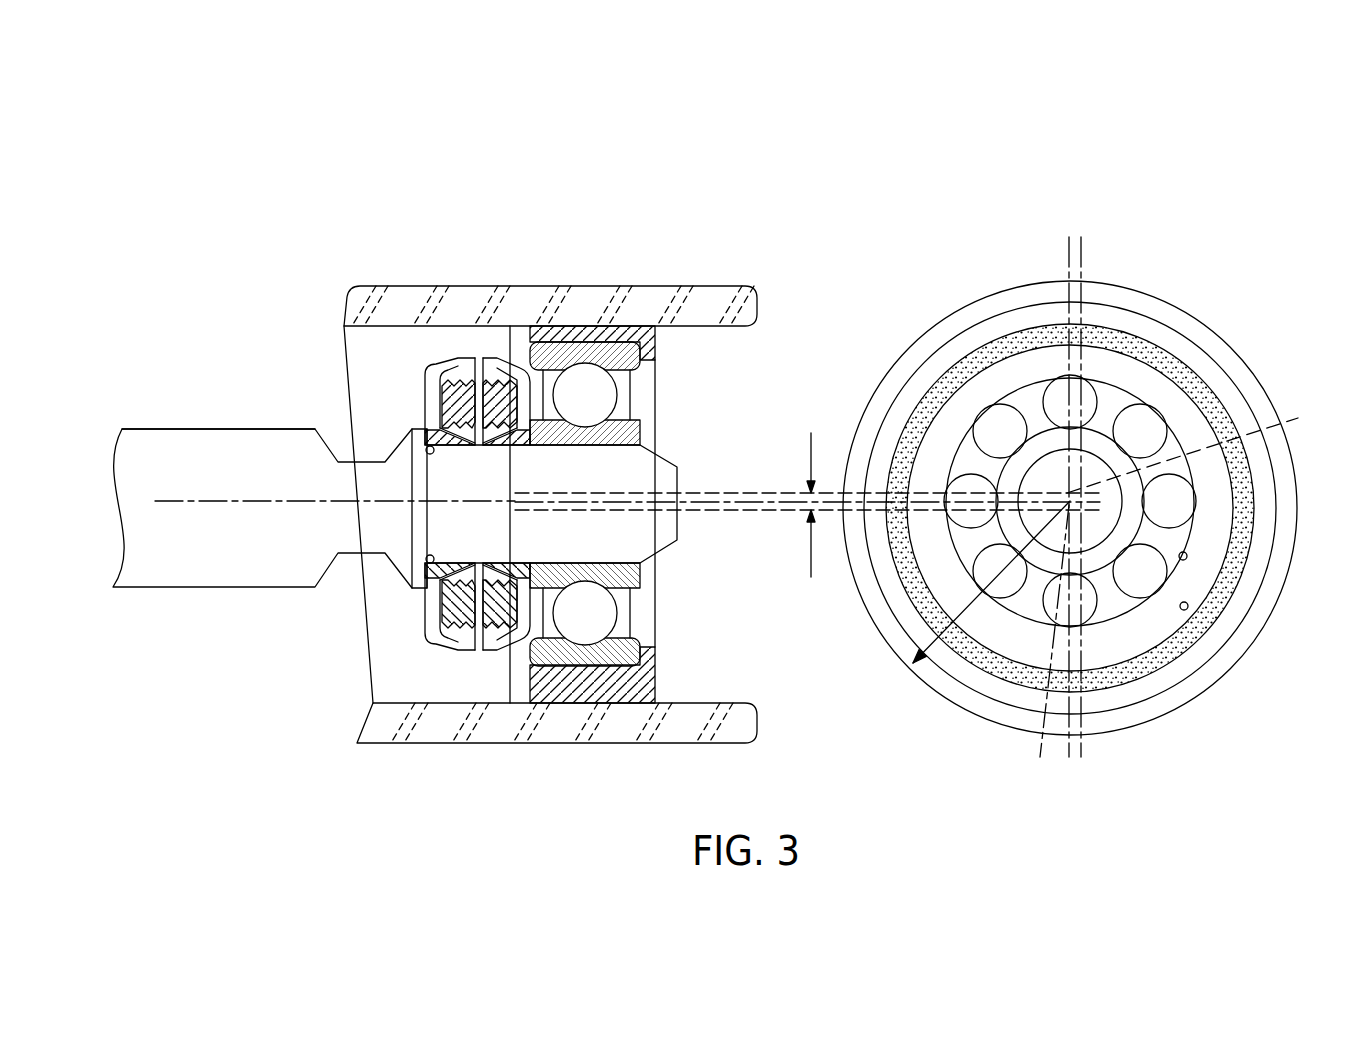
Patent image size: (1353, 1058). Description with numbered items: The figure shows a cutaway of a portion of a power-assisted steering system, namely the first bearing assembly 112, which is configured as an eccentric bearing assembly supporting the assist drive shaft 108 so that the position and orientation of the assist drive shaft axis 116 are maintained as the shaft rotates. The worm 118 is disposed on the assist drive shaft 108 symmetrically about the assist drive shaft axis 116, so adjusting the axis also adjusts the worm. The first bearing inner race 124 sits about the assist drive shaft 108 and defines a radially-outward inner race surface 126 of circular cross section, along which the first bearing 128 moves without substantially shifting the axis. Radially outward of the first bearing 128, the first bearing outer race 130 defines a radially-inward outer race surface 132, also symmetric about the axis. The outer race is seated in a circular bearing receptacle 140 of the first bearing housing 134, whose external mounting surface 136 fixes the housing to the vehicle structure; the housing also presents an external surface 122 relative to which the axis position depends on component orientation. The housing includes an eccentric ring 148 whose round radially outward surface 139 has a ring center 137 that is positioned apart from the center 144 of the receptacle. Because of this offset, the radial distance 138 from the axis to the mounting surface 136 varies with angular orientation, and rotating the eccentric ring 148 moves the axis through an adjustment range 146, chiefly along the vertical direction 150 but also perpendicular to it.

The assist drive shaft 108 is at (140, 446).
The first bearing assembly 112 is at (508, 177).
The assist drive shaft axis 116 is at (253, 495).
The worm 118 is at (235, 428).
The external surface 122 is at (620, 318).
The first bearing inner race 124 is at (1092, 430).
The inner race surface 126 is at (1035, 428).
The first bearing 128 is at (1177, 503).
The first bearing outer race 130 is at (1157, 390).
The outer race surface 132 is at (1180, 553).
The first bearing housing 134 is at (1025, 690).
The external mounting surface 136 is at (1153, 722).
The ring center 137 is at (1046, 643).
The radial distance 138 is at (905, 660).
The radially outward surface 139 is at (1113, 687).
The circular bearing receptacle 140 is at (1180, 607).
The center 144 is at (1204, 449).
The adjustment range 146 is at (808, 465).
The eccentric ring 148 is at (920, 590).
The vertical direction 150 is at (808, 552).